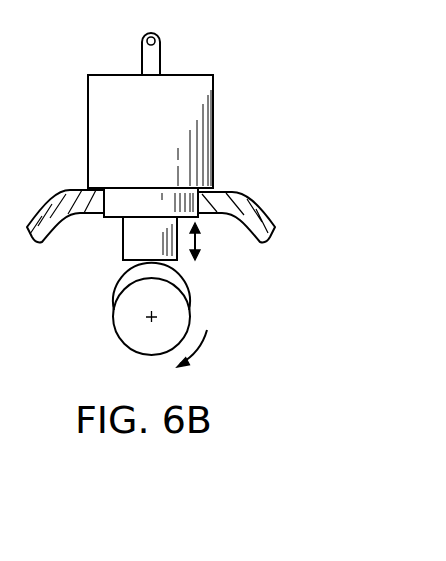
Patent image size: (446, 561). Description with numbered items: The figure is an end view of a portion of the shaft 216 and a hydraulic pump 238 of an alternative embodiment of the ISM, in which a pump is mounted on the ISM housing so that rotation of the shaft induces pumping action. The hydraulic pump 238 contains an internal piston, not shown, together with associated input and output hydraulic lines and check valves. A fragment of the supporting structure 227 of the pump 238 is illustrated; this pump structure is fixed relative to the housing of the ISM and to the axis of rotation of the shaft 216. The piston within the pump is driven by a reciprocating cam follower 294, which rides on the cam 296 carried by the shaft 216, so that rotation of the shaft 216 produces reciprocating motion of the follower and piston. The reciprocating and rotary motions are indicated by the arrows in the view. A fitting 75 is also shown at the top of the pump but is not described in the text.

The pin 75 is at (160, 57).
The hydraulic pump 238 is at (202, 113).
The supporting structure 227 is at (262, 207).
The reciprocating cam follower 294 is at (130, 236).
The cam 296 is at (186, 283).
The shaft 216 is at (127, 333).